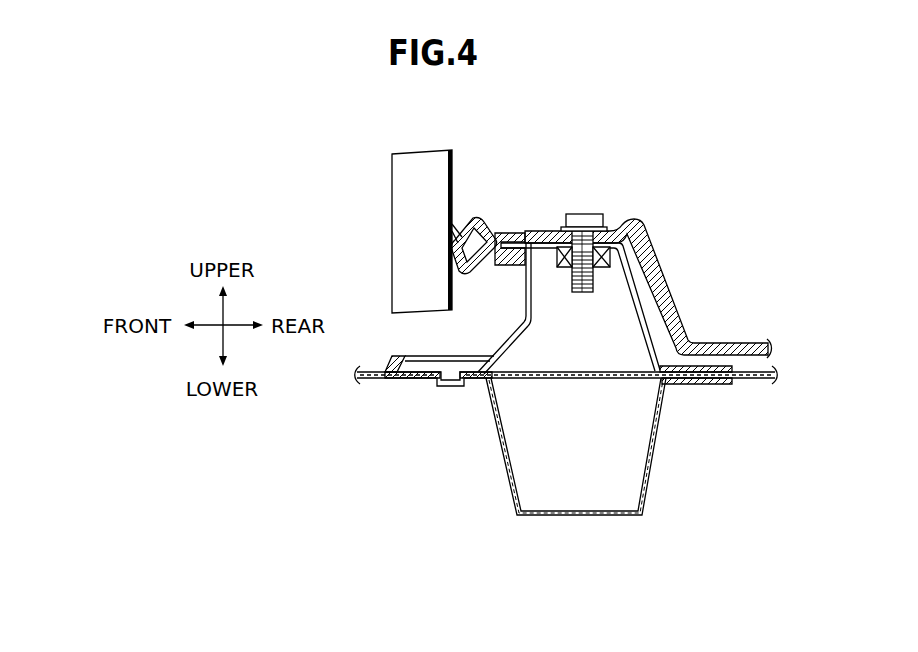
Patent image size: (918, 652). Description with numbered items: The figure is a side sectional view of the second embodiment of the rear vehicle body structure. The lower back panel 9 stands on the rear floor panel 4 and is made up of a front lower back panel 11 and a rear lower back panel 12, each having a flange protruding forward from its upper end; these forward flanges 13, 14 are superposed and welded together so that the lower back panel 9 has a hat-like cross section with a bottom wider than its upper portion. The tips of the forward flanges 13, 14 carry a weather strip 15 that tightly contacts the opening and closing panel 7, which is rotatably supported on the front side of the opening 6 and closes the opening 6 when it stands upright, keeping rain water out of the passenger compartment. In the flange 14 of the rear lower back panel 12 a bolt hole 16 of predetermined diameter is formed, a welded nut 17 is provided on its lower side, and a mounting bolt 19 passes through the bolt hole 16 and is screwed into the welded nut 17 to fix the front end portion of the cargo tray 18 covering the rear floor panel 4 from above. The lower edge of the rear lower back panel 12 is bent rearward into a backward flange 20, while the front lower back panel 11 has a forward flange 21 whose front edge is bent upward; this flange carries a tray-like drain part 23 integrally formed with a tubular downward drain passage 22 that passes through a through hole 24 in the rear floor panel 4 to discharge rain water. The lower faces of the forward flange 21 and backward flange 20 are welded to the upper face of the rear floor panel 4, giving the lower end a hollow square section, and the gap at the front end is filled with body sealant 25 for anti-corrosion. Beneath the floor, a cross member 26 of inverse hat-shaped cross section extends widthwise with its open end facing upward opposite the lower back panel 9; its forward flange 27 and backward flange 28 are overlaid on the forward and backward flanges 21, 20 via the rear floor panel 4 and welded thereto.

The rear floor panel 4 is at (612, 378).
The opening 6 is at (587, 168).
The opening and closing panel 7 is at (397, 190).
The lower back panel 9 is at (645, 331).
The front lower back panel 11 is at (512, 342).
The rear lower back panel 12 is at (613, 307).
The forward flange 13 is at (519, 265).
The forward flange 14 is at (538, 230).
The weather strip 15 is at (471, 223).
The bolt hole 16 is at (594, 253).
The welded nut 17 is at (607, 267).
The cargo tray 18 is at (648, 257).
The mounting bolt 19 is at (590, 222).
The backward flange 20 is at (713, 366).
The forward flange 21 is at (528, 308).
The drain passage 22 is at (468, 386).
The drain part 23 is at (424, 339).
The through hole 24 is at (433, 384).
The body sealant 25 is at (393, 361).
The cross member 26 is at (580, 515).
The forward flange 27 is at (386, 379).
The backward flange 28 is at (700, 384).